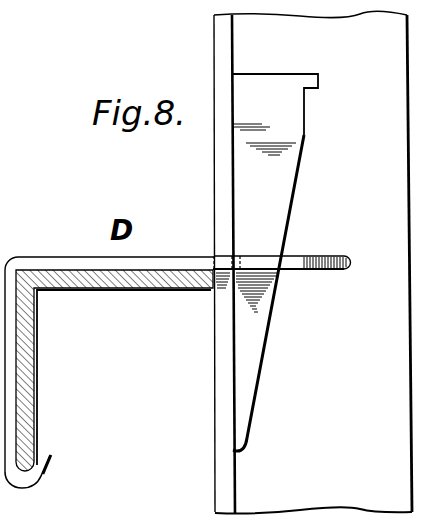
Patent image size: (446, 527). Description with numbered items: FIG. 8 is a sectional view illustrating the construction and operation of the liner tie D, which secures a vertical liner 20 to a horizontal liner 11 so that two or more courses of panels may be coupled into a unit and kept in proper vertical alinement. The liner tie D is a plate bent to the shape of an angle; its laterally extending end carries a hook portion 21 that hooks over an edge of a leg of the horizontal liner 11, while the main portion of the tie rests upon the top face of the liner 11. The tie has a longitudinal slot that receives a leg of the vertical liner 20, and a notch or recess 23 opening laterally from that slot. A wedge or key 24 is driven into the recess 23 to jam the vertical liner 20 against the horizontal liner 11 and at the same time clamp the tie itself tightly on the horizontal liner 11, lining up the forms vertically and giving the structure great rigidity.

The vertical liner 20 is at (313, 262).
The wedge or key 24 is at (270, 211).
The notch or recess 23 is at (281, 258).
The liner 11 is at (73, 275).
The hook portion 21 is at (37, 480).